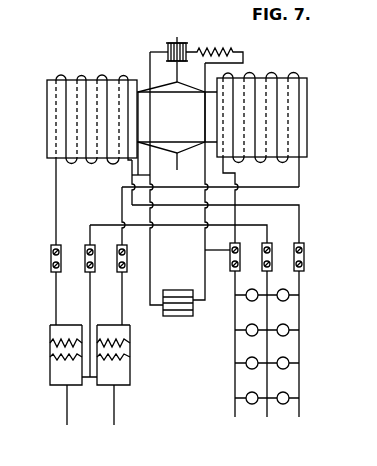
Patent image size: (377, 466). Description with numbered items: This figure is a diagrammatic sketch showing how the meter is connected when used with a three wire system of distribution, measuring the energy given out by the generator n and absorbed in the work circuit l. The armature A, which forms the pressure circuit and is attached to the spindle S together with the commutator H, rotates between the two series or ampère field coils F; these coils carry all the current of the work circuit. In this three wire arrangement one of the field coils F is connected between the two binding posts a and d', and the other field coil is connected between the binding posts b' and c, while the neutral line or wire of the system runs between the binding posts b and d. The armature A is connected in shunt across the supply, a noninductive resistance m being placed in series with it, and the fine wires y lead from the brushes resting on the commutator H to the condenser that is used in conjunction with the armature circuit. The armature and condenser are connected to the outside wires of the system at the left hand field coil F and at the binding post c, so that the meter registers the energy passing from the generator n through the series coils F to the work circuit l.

The series coils F is at (90, 160).
The armature A is at (177, 118).
The commutator H is at (168, 46).
The spindle S is at (178, 39).
The resistance m is at (214, 48).
The binding post a is at (61, 258).
The binding post b is at (97, 258).
The binding post b' is at (130, 258).
The binding post c is at (230, 258).
The binding post d is at (273, 257).
The binding post d' is at (307, 257).
The generator n is at (95, 348).
The fine wires y is at (180, 316).
The work circuit l is at (299, 362).